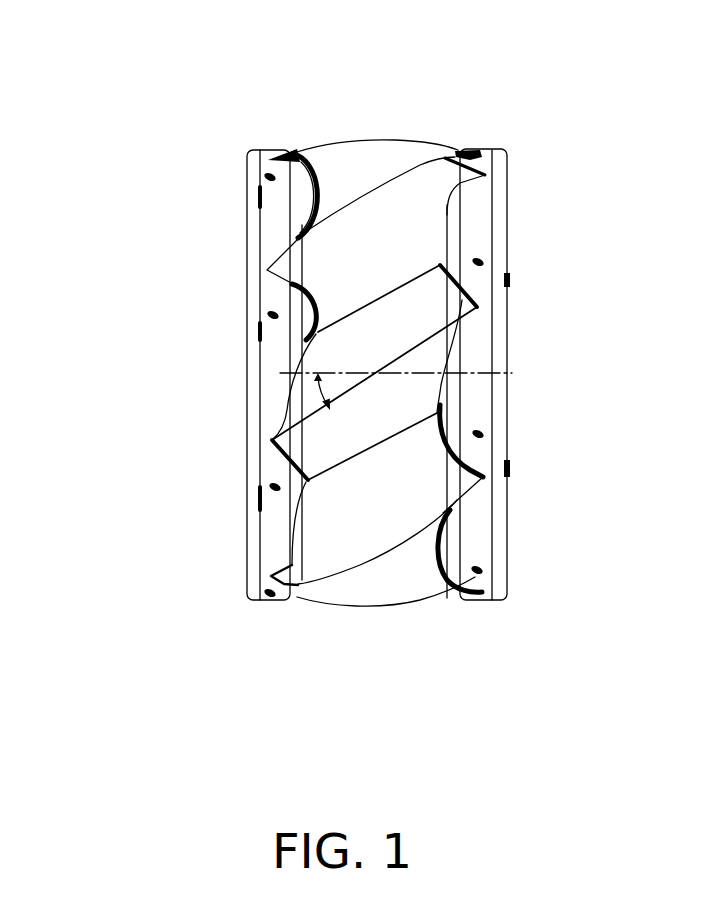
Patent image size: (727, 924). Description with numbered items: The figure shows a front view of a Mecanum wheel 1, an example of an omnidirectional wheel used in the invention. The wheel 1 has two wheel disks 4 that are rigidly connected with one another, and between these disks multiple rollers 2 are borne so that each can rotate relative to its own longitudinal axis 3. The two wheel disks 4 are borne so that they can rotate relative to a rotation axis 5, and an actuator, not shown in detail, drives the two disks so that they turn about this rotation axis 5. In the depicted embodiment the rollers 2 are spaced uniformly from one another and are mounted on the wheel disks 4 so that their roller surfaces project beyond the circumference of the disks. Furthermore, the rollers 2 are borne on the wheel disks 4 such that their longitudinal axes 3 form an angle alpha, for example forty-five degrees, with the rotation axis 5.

The Mecanum wheel 1 is at (130, 98).
The rollers 2 is at (337, 360).
The longitudinal axes 3 is at (503, 257).
The wheel disks 4 is at (460, 150).
The rotation axis 5 is at (467, 372).